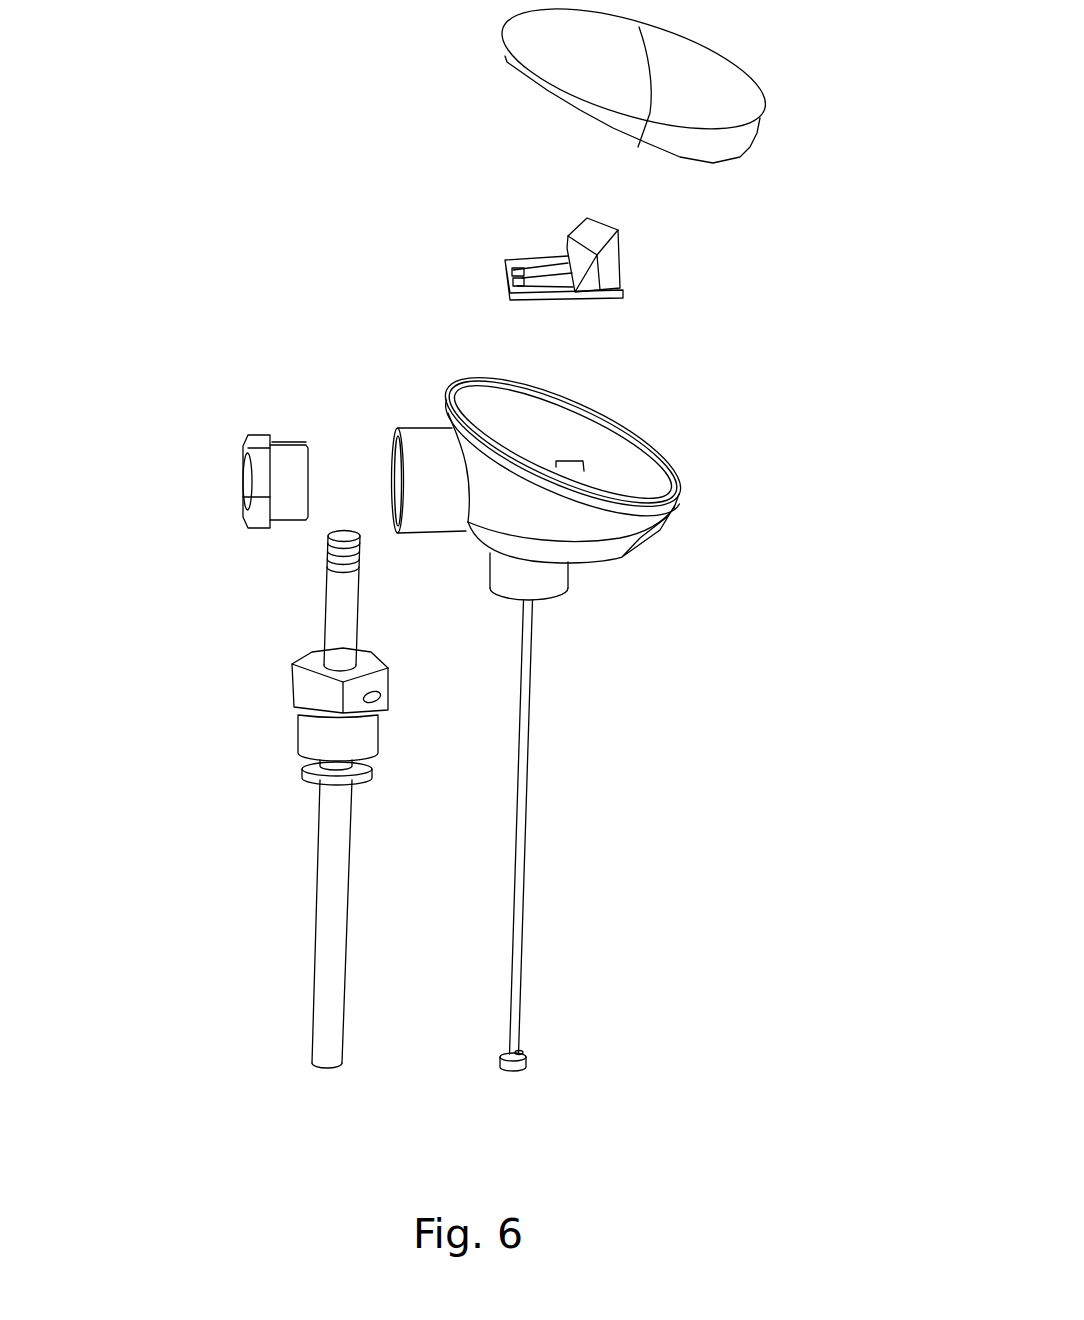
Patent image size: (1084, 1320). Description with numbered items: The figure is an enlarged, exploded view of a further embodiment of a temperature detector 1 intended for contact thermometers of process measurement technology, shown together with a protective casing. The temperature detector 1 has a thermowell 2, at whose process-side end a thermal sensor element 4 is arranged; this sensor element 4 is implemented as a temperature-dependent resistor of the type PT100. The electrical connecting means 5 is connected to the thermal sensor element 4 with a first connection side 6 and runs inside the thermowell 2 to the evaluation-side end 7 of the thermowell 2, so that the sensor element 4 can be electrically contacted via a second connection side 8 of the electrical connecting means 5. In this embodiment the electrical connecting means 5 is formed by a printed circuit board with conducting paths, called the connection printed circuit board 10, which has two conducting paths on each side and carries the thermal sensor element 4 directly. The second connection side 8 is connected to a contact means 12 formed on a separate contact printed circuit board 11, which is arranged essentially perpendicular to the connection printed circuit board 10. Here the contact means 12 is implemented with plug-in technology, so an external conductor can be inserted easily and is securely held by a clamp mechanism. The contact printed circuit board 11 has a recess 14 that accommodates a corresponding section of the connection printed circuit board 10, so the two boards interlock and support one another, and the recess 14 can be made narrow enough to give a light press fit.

The temperature detector 1 is at (753, 547).
The thermowell 2 is at (337, 837).
The thermal sensor element 4 is at (525, 1047).
The electrical connecting means 5 is at (530, 870).
The first connection side 6 is at (524, 1071).
The evaluation-side end 7 is at (594, 640).
The second connection side 8 is at (571, 621).
The connection printed circuit board 10 is at (523, 834).
The contact printed circuit board 11 is at (510, 262).
The contact means 12 is at (603, 265).
The recess 14 is at (522, 277).